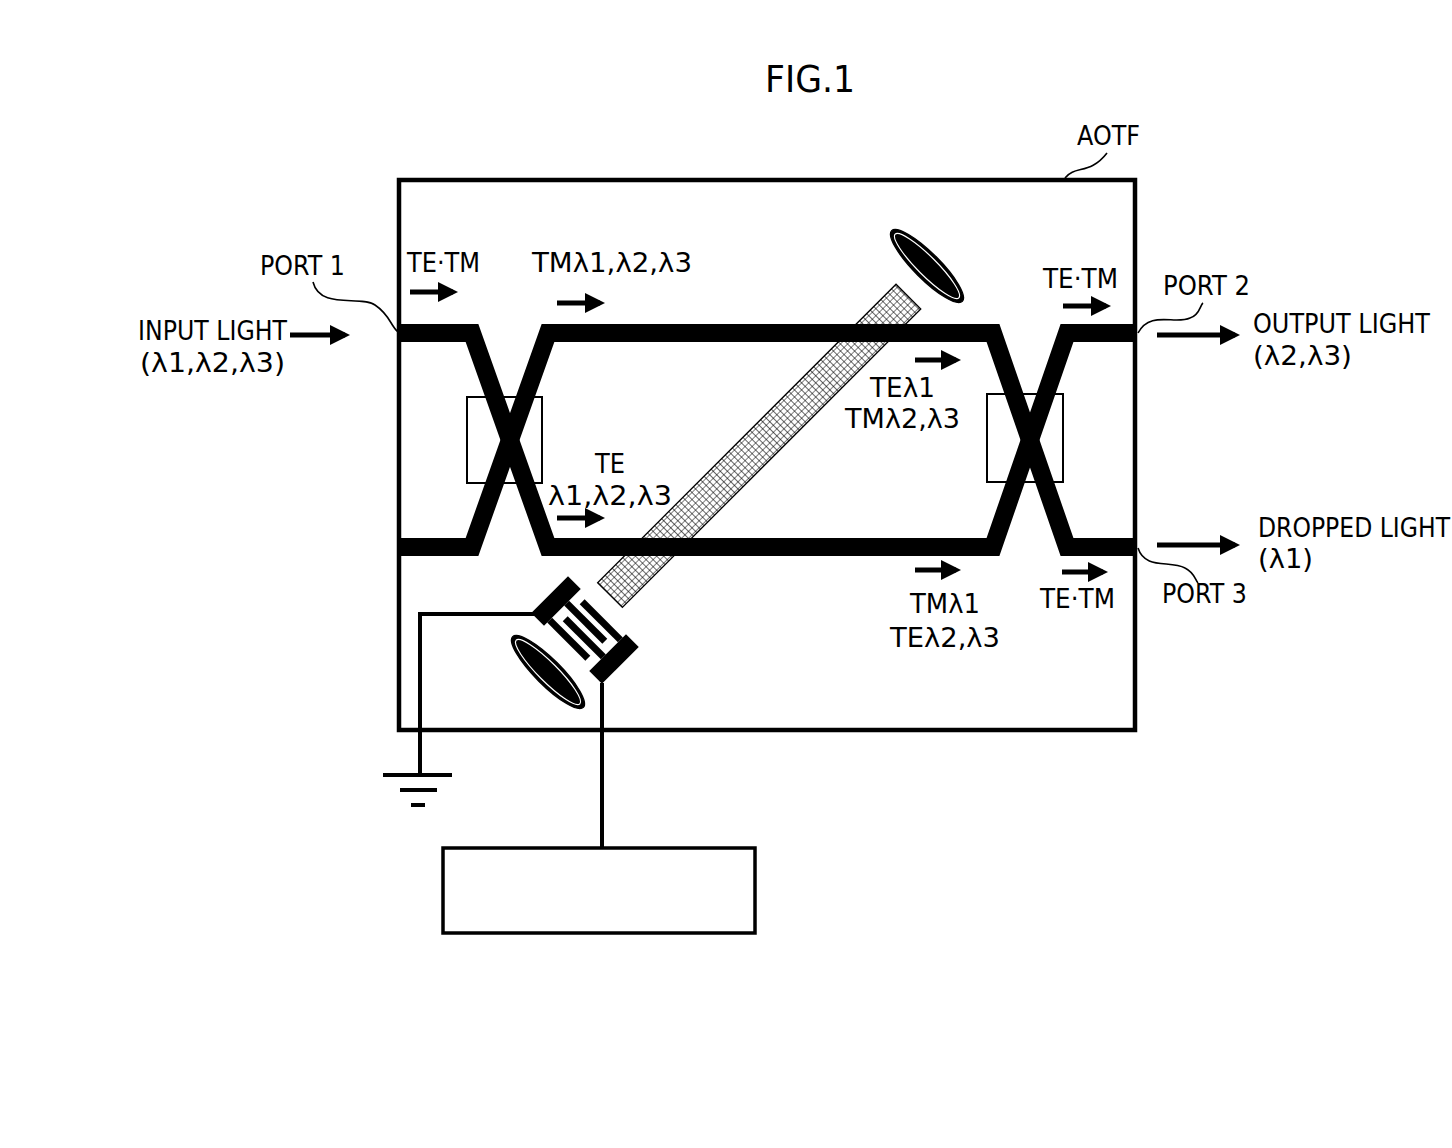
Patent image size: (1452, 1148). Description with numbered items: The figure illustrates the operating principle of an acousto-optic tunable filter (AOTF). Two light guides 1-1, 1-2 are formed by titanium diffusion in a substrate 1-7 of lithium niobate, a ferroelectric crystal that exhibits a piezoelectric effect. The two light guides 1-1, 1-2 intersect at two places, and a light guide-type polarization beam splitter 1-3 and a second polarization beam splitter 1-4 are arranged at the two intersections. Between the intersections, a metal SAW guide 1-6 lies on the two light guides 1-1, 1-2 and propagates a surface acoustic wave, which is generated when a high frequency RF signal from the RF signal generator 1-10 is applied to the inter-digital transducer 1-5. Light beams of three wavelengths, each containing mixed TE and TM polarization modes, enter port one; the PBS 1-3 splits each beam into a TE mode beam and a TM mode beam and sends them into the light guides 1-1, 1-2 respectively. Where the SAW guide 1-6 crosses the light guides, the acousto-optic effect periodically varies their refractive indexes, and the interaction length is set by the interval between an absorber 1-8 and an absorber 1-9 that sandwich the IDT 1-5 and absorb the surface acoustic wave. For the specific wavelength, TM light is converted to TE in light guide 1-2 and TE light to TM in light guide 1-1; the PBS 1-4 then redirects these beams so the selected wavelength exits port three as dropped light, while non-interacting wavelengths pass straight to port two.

The light guide 1-1 is at (425, 345).
The light guide 1-2 is at (1095, 535).
The polarization beam splitter 1-3 is at (543, 418).
The polarization beam splitter 1-4 is at (985, 477).
The inter-digital transducer 1-5 is at (636, 634).
The SAW guide 1-6 is at (880, 300).
The substrate 1-7 is at (598, 193).
The absorber 1-8 is at (538, 700).
The absorber 1-9 is at (933, 252).
The RF signal generator 1-10 is at (645, 845).